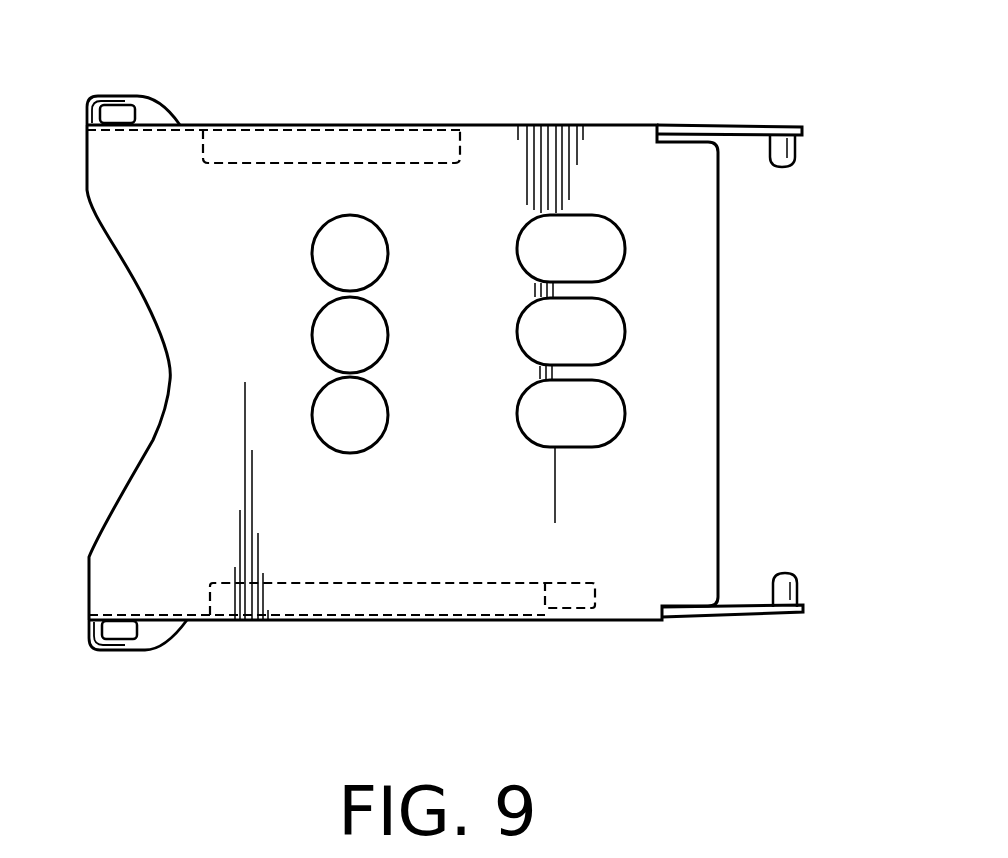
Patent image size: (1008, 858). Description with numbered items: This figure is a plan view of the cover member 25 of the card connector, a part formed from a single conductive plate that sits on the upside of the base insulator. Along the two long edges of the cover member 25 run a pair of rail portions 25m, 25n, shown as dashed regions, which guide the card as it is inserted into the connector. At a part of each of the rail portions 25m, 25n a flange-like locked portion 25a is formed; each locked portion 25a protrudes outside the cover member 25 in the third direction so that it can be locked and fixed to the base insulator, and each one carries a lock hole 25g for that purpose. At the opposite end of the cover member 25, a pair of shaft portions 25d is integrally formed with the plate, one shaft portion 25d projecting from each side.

The cover member 25 is at (587, 133).
The locked portion 25a is at (155, 112).
The lock hole 25g is at (118, 114).
The shaft portion 25d is at (793, 153).
The rail portion 25m is at (348, 147).
The rail portion 25n is at (350, 595).